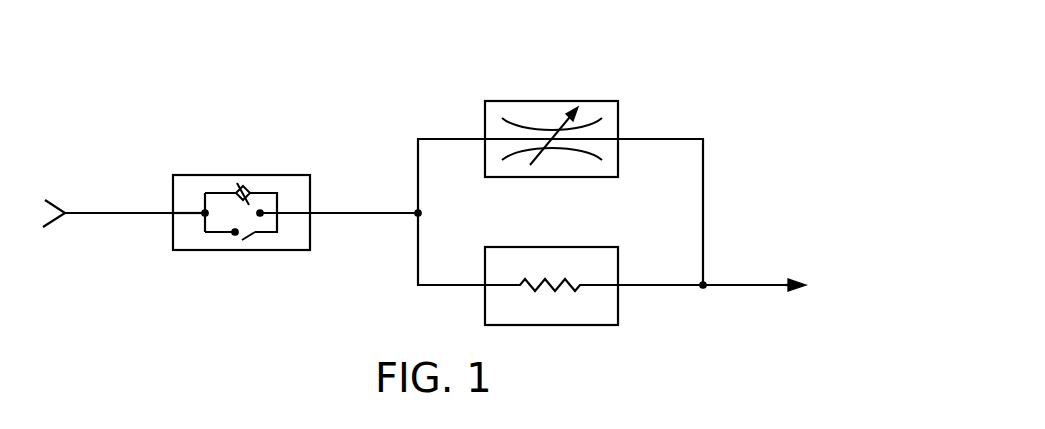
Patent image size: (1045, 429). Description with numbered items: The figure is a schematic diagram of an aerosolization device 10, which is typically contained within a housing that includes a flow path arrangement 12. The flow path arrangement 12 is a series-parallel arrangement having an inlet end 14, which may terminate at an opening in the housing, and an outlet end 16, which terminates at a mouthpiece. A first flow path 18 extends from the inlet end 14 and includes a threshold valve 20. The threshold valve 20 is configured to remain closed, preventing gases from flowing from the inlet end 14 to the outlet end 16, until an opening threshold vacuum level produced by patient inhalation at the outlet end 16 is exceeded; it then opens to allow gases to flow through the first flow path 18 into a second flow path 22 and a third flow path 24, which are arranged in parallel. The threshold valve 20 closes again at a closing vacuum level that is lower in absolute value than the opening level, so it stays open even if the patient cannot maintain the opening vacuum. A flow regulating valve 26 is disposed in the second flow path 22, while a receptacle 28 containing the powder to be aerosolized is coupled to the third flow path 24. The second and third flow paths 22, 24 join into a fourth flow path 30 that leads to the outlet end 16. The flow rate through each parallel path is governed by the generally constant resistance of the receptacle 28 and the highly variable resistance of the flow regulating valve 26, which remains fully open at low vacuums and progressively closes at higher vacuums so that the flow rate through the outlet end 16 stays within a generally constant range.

The aerosolization device 10 is at (627, 60).
The flow path arrangement 12 is at (363, 218).
The inlet end 14 is at (63, 210).
The outlet end 16 is at (792, 283).
The first flow path 18 is at (127, 216).
The threshold valve 20 is at (245, 175).
The second flow path 22 is at (456, 145).
The third flow path 24 is at (445, 282).
The flow regulating valve 26 is at (620, 118).
The receptacle 28 is at (620, 257).
The fourth flow path 30 is at (718, 283).